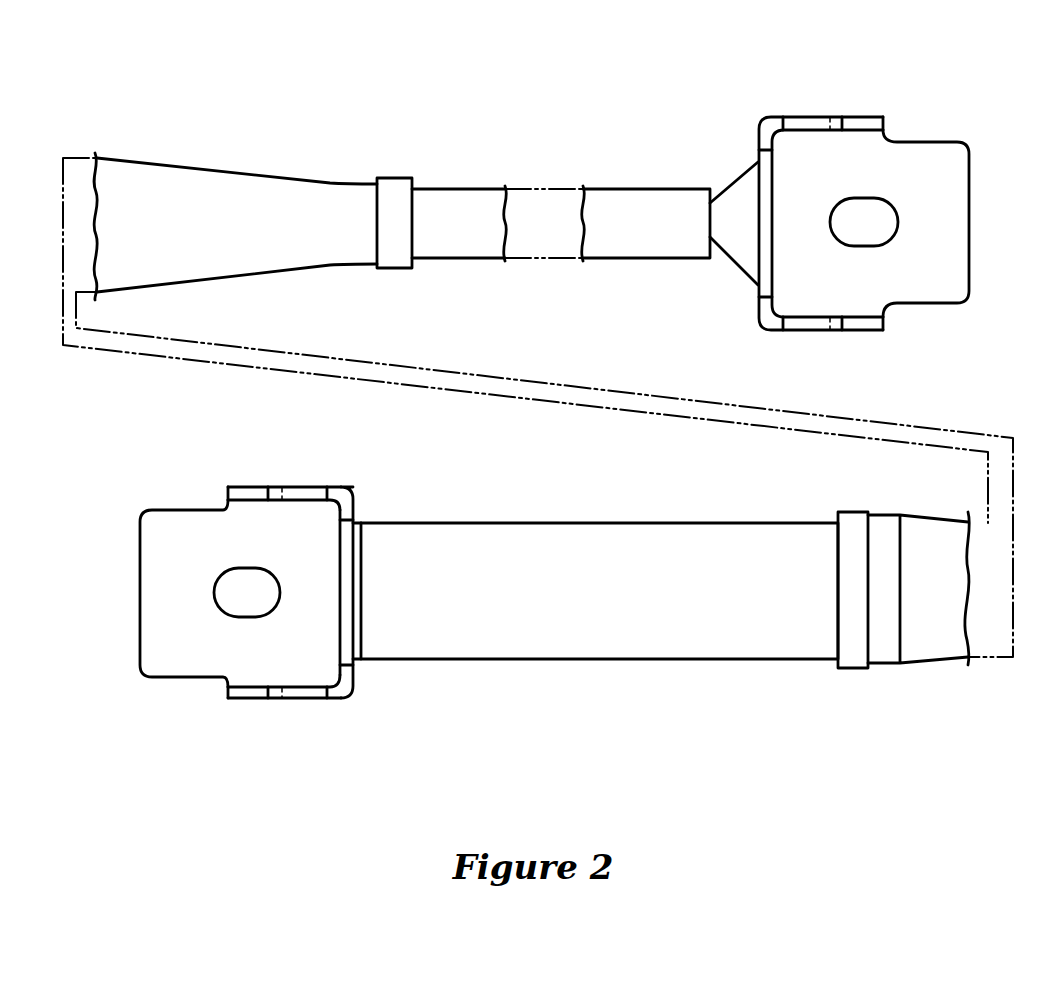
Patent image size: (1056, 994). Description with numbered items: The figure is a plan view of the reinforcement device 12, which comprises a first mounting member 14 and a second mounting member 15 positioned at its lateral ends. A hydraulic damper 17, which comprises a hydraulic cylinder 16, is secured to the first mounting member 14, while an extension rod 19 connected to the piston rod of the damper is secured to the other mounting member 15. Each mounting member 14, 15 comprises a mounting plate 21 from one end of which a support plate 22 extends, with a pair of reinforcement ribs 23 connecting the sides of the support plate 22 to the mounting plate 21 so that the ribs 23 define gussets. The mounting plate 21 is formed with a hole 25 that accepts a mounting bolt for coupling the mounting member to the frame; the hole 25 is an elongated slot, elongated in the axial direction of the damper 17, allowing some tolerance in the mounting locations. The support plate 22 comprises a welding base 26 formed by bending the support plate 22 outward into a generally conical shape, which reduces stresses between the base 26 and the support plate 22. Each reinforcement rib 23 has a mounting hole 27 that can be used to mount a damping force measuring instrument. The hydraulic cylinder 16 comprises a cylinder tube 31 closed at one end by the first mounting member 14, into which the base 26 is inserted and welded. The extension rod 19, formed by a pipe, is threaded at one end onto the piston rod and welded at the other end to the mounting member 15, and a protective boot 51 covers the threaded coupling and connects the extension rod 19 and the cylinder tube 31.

The reinforcement device 12 is at (268, 140).
The first mounting member 14 is at (138, 638).
The second mounting member 15 is at (549, 400).
The hydraulic cylinder 16 is at (439, 645).
The cylinder tube 31 is at (595, 642).
The hydraulic damper 17 is at (661, 661).
The extension rod 19 is at (623, 259).
The mounting plate 21 is at (549, 435).
The support plate 22 is at (763, 287).
The reinforcement ribs 23 is at (858, 122).
The hole 25 is at (892, 212).
The welding base 26 is at (742, 198).
The mounting hole 27 is at (790, 128).
The protective boot 51 is at (920, 663).